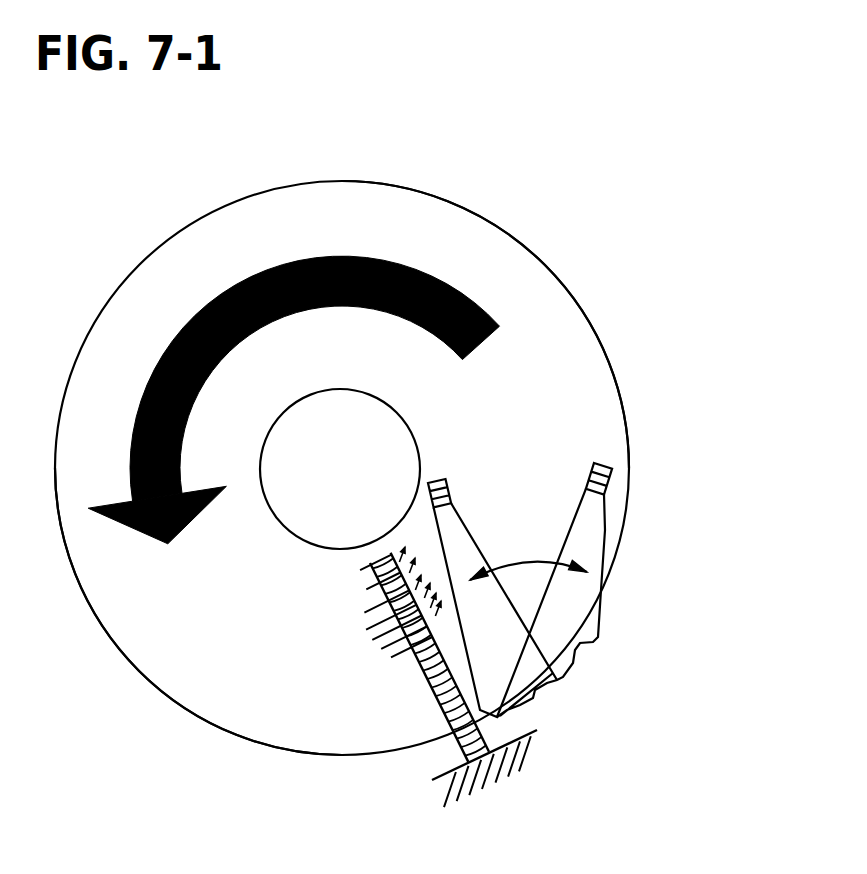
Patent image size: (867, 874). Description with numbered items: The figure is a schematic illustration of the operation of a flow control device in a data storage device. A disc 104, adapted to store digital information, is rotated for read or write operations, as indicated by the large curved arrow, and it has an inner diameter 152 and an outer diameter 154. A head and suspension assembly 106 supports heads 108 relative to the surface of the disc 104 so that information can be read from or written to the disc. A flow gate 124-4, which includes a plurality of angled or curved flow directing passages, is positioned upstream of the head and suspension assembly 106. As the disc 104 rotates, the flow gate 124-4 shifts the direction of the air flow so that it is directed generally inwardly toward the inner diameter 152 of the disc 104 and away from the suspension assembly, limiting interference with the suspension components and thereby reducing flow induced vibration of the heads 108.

The disc 104 is at (503, 226).
The outer diameter 154 is at (588, 323).
The inner diameter 152 is at (395, 408).
The head 108 is at (446, 478).
The head and suspension assembly 106 is at (470, 542).
The flow gate 124-4 is at (375, 647).